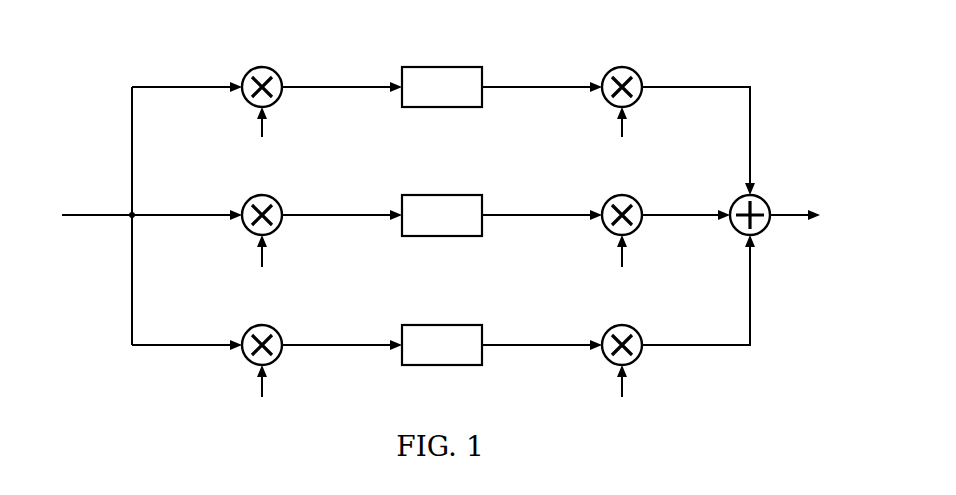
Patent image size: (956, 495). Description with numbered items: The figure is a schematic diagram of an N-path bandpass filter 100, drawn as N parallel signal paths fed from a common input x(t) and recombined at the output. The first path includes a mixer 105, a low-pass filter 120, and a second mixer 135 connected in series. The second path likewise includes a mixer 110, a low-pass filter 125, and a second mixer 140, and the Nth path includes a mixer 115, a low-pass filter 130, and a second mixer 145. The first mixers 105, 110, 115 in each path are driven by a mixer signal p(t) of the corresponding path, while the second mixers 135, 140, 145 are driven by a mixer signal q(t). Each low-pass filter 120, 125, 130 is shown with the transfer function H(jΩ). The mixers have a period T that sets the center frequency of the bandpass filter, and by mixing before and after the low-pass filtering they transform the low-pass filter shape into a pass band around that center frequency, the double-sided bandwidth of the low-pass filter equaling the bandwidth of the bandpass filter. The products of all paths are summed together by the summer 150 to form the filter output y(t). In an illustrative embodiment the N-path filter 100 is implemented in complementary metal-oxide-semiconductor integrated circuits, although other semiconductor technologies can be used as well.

The N-path bandpass filter 100 is at (110, 117).
The mixer 105 is at (247, 70).
The mixer 110 is at (247, 233).
The mixer 115 is at (247, 363).
The low-pass filter 120 is at (442, 66).
The low-pass filter 125 is at (442, 194).
The low-pass filter 130 is at (442, 367).
The second mixer 135 is at (635, 70).
The second mixer 140 is at (636, 233).
The second mixer 145 is at (636, 363).
The summer 150 is at (767, 200).